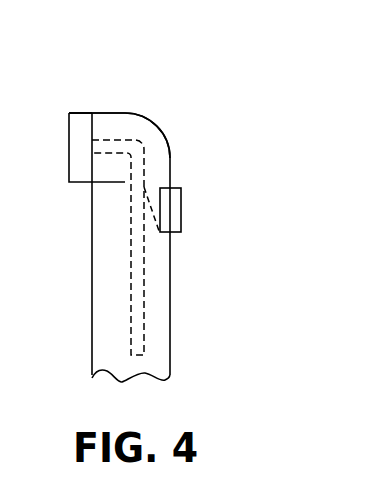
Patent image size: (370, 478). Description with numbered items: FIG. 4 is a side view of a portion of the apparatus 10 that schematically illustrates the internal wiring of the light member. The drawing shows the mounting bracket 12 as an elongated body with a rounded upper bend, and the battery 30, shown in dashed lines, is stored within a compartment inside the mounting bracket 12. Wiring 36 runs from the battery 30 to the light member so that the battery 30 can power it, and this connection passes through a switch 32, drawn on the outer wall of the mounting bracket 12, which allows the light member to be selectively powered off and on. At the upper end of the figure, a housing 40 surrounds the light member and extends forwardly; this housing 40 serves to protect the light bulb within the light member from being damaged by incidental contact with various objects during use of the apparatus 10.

The apparatus 10 is at (185, 131).
The mounting bracket 12 is at (170, 312).
The battery 30 is at (127, 317).
The switch 32 is at (181, 201).
The wiring 36 is at (140, 250).
The housing 40 is at (79, 125).